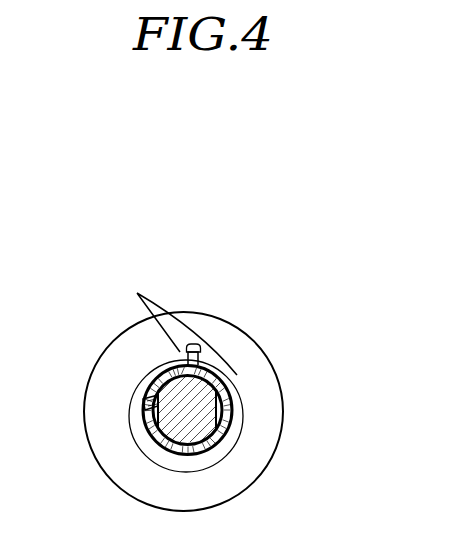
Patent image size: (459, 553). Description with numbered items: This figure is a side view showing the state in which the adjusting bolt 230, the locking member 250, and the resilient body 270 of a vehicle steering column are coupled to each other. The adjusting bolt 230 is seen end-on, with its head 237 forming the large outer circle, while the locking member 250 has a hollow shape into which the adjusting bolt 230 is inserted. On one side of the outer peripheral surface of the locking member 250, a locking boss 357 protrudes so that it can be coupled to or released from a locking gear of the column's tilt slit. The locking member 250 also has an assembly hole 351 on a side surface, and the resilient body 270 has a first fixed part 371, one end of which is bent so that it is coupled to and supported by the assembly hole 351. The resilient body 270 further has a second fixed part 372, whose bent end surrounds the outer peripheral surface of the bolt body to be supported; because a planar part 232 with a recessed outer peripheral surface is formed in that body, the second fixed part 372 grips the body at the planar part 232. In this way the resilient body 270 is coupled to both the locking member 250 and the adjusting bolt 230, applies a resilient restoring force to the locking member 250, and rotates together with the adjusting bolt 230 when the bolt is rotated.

The adjusting bolt 230 is at (178, 364).
The planar part 232 is at (142, 409).
The head 237 is at (277, 410).
The locking member 250 is at (235, 427).
The resilient body 270 is at (217, 438).
The assembly hole 351 is at (192, 345).
The locking boss 357 is at (158, 300).
The first fixed part 371 is at (200, 350).
The second fixed part 372 is at (155, 404).